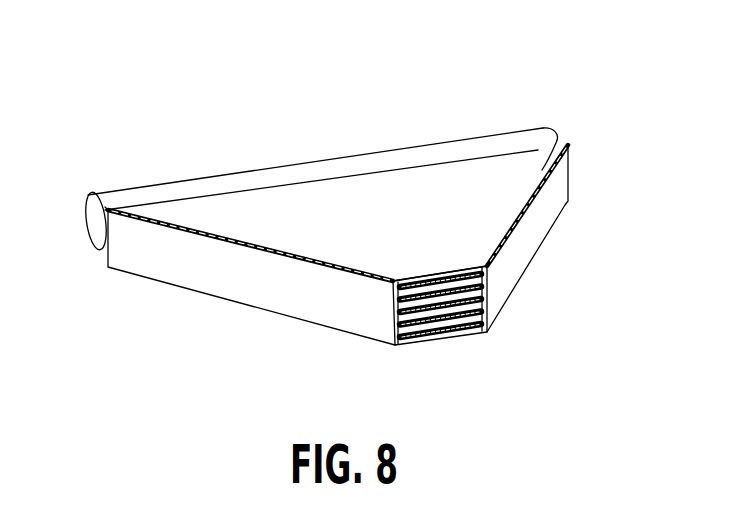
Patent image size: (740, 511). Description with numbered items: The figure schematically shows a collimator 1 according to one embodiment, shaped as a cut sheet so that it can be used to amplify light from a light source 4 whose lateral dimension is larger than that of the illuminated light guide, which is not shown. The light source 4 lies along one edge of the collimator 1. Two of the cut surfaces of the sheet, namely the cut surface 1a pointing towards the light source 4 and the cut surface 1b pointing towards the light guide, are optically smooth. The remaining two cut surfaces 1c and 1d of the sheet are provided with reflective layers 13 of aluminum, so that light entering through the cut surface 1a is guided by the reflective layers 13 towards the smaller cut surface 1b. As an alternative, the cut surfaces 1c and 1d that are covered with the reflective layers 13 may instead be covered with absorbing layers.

The collimator 1 is at (307, 223).
The cut surface 1a is at (130, 207).
The cut surface 1b is at (448, 342).
The cut surface 1c is at (543, 175).
The cut surface 1d is at (167, 223).
The light source 4 is at (387, 137).
The reflective layers 13 is at (227, 282).